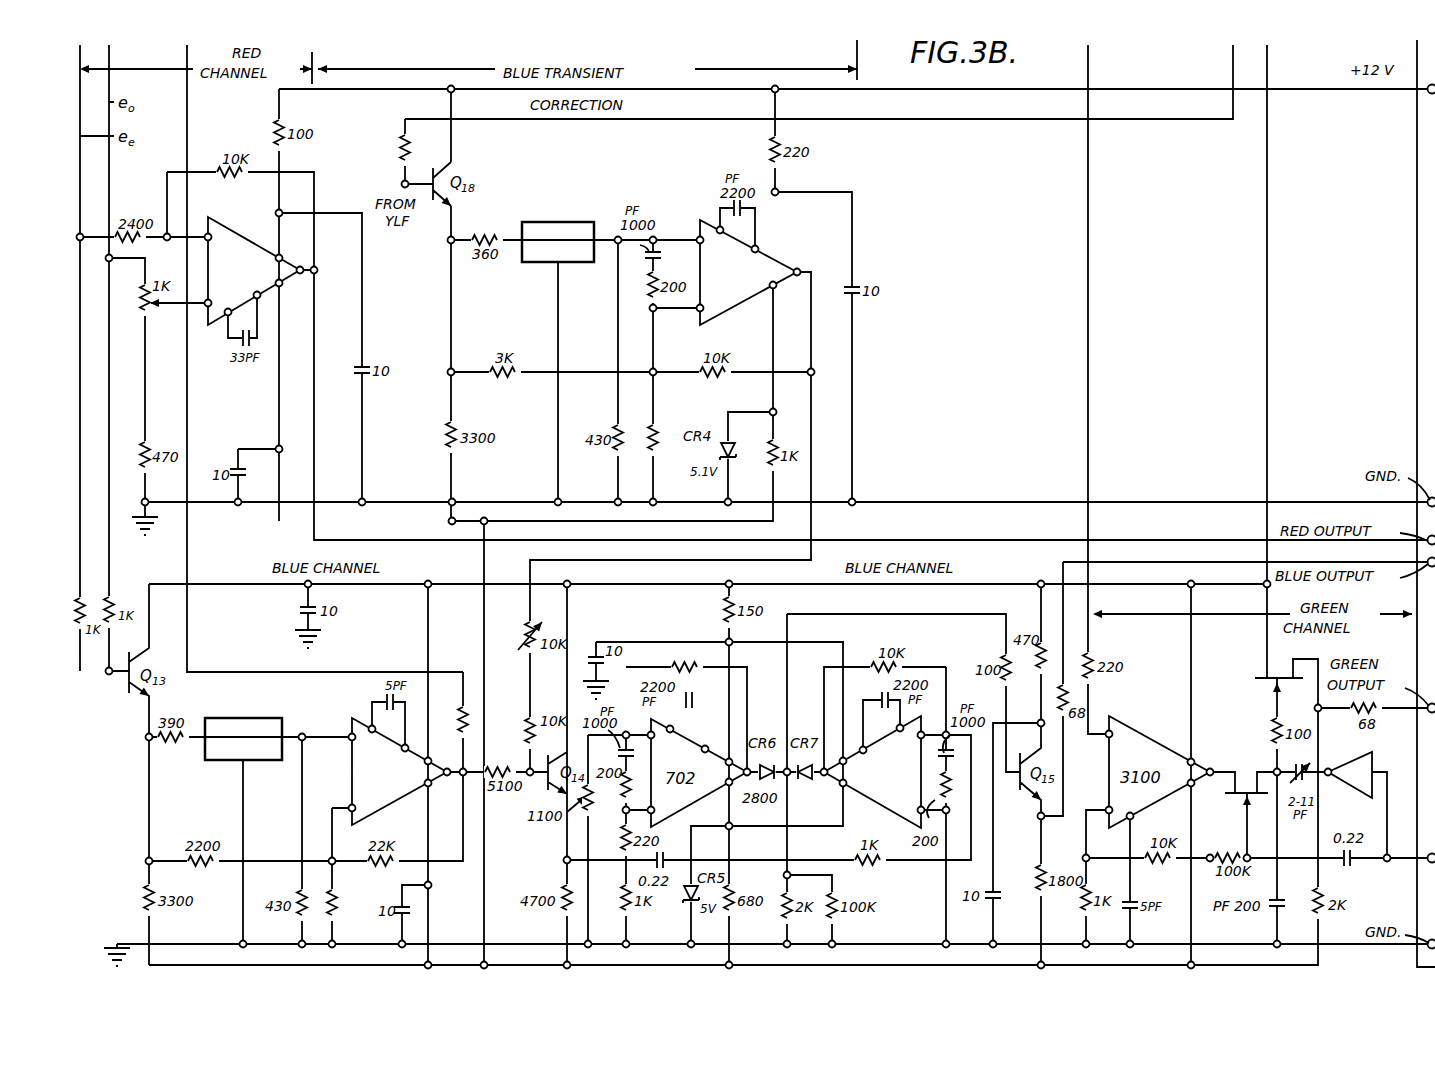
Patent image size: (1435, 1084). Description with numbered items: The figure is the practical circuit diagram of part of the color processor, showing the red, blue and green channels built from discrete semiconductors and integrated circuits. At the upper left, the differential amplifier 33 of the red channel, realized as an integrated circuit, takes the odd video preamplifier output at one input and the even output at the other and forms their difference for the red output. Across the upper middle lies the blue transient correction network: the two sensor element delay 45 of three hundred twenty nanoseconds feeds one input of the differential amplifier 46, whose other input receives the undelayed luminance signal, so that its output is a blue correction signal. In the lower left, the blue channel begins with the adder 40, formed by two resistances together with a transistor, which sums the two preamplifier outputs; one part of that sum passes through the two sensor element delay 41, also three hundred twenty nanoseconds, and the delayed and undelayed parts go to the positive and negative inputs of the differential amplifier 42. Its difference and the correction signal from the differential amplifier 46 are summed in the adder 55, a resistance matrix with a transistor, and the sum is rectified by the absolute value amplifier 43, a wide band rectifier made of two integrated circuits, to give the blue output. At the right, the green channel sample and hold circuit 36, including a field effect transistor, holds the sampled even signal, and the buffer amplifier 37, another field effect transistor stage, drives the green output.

The differential amplifier 33 is at (239, 234).
The sample and hold circuit 36 is at (1248, 765).
The buffer amplifier 37 is at (1295, 660).
The adder 40 is at (105, 590).
The two sensor element delay 41 is at (240, 718).
The differential amplifier 42 is at (353, 722).
The absolute value amplifier 43 is at (822, 810).
The two sensor element delay 45 is at (558, 222).
The differential amplifier 46 is at (708, 225).
The adder 55 is at (515, 734).